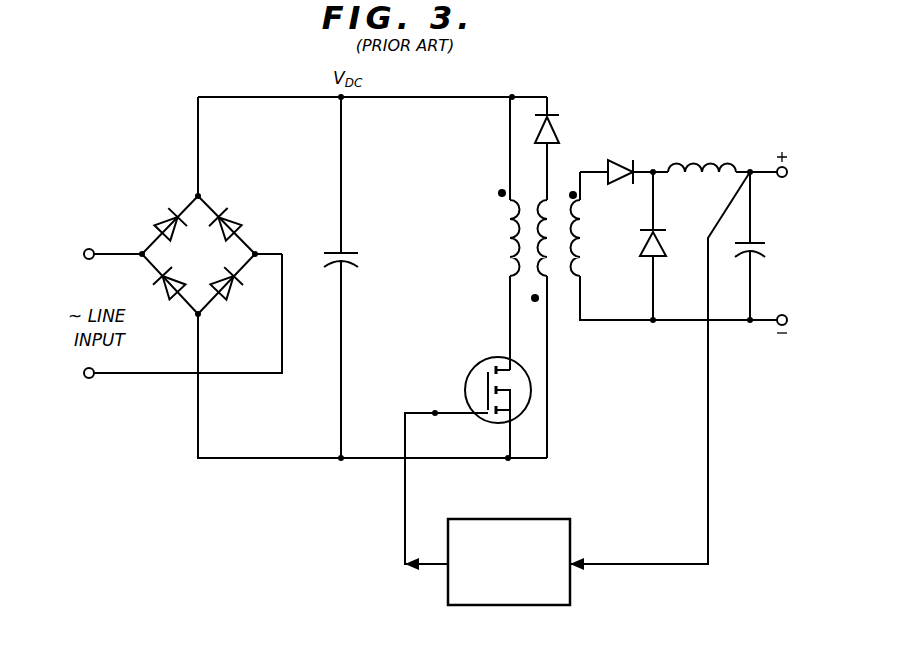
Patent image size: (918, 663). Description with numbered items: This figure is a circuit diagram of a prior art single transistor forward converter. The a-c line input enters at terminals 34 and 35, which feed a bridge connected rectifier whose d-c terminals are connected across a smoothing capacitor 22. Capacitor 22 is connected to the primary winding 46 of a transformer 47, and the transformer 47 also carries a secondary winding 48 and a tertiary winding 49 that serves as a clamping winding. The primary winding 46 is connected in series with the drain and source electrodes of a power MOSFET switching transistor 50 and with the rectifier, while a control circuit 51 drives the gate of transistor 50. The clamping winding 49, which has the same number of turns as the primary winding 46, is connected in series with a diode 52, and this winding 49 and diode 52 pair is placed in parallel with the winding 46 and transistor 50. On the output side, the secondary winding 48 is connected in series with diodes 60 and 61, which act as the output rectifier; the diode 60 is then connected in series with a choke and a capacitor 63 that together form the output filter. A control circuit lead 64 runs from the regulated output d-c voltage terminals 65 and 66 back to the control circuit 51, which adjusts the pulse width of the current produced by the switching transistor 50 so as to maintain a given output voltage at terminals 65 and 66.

The smoothing capacitor 22 is at (323, 268).
The terminal 34 is at (101, 228).
The terminal 35 is at (87, 379).
The primary winding 46 is at (500, 233).
The transformer 47 is at (531, 191).
The secondary winding 48 is at (585, 249).
The tertiary winding 49 is at (536, 281).
The power MOSFET switching transistor 50 is at (473, 370).
The control circuit 51 is at (560, 518).
The diode 52 is at (560, 135).
The diode 60 is at (618, 159).
The diode 61 is at (640, 262).
The capacitor 63 is at (766, 248).
The control circuit lead 64 is at (712, 478).
The regulated output d-c voltage terminal 65 is at (806, 143).
The regulated output d-c voltage terminal 66 is at (789, 326).